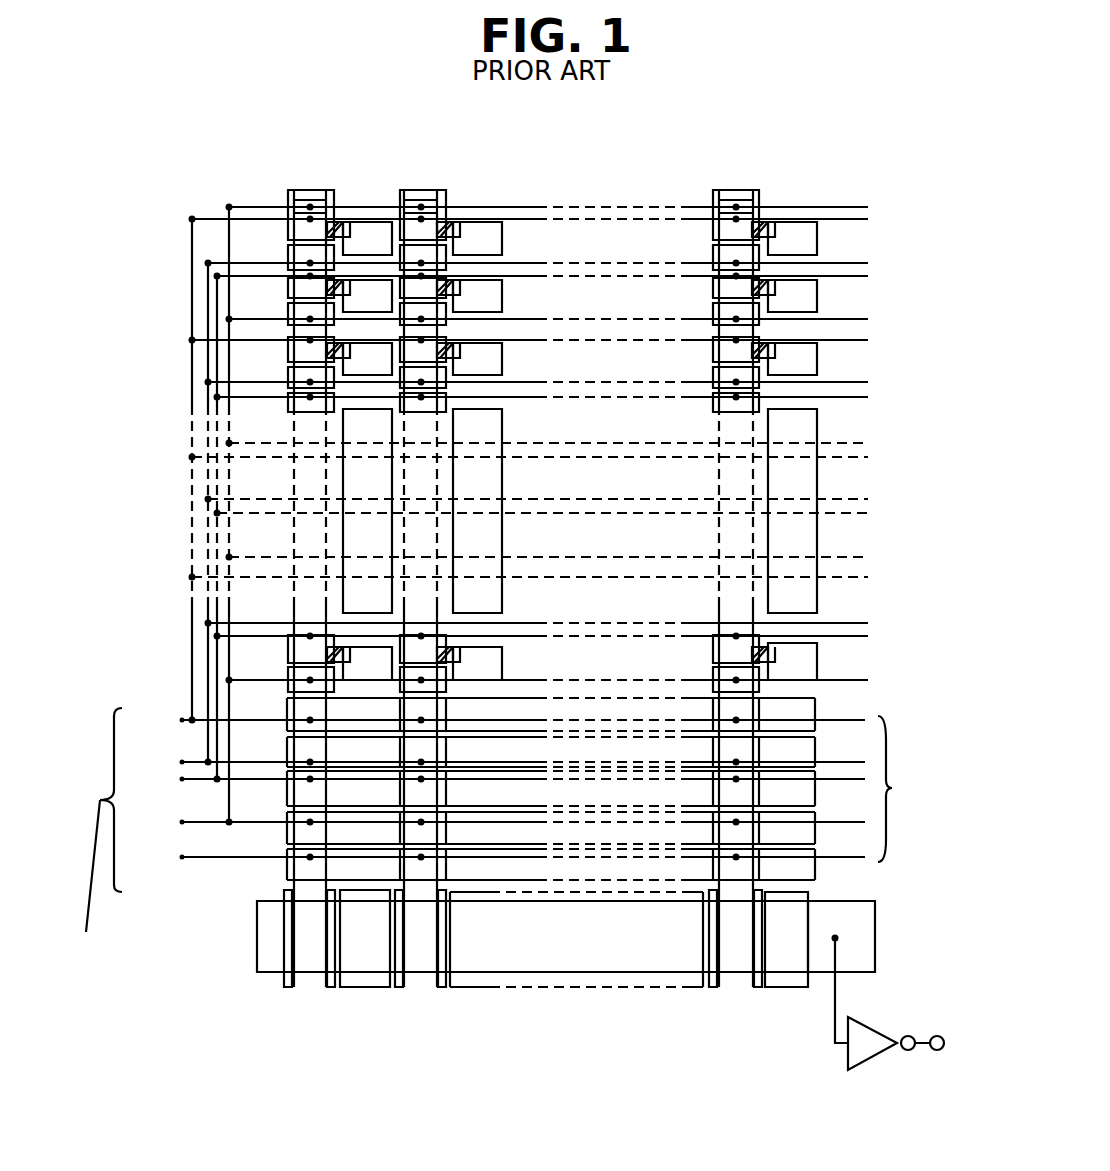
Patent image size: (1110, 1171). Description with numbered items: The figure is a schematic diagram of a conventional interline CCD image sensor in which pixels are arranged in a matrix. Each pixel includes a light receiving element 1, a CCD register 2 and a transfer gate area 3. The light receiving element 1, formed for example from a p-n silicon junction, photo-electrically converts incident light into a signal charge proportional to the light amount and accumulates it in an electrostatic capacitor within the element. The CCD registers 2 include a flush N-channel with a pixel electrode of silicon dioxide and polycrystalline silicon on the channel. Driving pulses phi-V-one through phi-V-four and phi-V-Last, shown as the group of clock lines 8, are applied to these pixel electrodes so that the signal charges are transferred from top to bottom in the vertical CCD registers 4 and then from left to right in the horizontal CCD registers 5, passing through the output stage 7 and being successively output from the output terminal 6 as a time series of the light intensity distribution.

The light receiving element 1 is at (372, 217).
The CCD register 2 is at (299, 190).
The transfer gate area 3 is at (452, 222).
The vertical CCD register 4 is at (293, 484).
The horizontal CCD register 5 is at (306, 950).
The output terminal 6 is at (937, 1035).
The output gate 7 is at (858, 913).
The vertical clock signal lines 8 is at (489, 838).